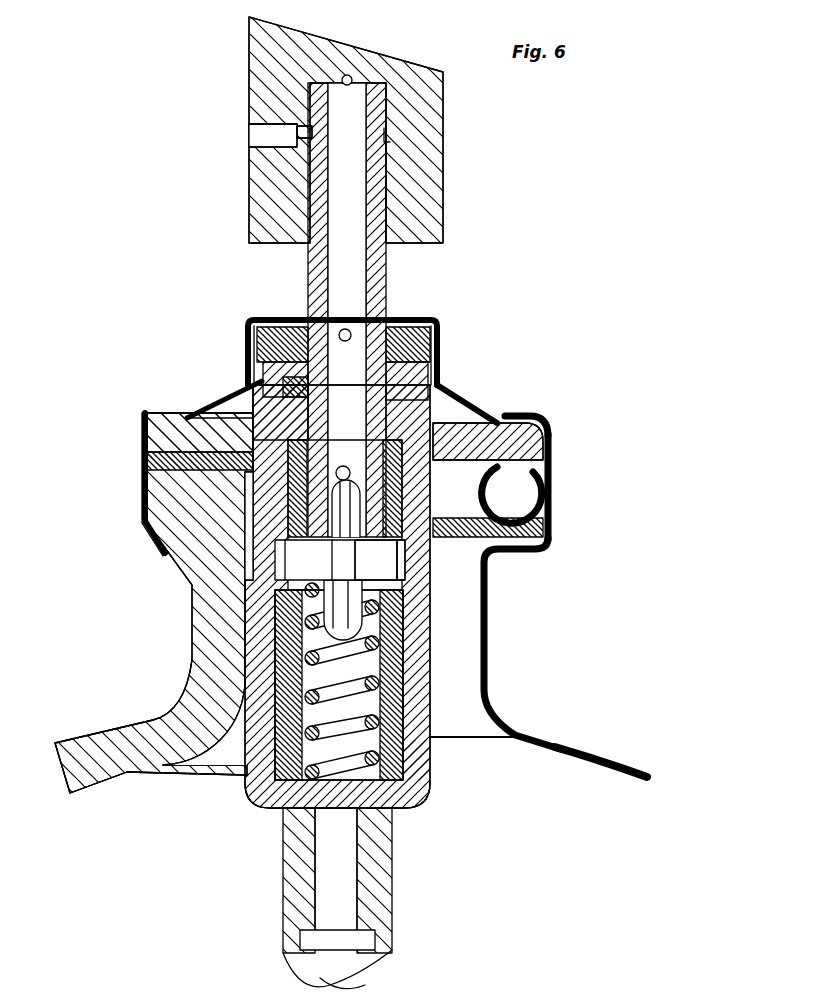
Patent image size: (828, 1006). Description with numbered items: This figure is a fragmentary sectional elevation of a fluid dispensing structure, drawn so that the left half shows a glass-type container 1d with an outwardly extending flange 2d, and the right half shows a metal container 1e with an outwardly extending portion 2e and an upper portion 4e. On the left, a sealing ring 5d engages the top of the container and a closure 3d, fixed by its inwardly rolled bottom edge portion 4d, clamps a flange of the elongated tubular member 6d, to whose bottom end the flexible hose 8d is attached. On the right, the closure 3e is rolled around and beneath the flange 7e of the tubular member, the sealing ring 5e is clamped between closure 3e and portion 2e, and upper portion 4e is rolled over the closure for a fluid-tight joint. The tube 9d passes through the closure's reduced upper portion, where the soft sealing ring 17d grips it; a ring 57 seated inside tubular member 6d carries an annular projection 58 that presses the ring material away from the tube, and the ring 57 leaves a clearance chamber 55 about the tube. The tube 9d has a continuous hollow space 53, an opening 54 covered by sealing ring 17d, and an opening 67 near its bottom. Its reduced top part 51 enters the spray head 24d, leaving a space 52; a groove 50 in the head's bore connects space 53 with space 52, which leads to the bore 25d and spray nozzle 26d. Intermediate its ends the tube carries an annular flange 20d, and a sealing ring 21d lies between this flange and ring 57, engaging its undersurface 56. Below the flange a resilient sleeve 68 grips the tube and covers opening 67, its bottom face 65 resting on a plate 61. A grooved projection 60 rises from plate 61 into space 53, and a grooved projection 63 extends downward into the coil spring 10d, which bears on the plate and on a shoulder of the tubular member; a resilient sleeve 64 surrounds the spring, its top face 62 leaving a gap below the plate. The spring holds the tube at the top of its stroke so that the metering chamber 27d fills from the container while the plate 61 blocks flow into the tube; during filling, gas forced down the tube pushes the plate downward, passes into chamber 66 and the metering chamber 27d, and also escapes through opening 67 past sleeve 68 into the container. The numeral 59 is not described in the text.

The container 1d is at (100, 740).
The container 1e is at (575, 737).
The outwardly extending flange 2d is at (170, 577).
The outwardly extending portion 2e is at (548, 541).
The closure 3d is at (160, 541).
The closure 3e is at (552, 462).
The inwardly rolled bottom edge portion 4d is at (178, 548).
The upper portion 4e is at (537, 418).
The sealing ring 5d is at (148, 470).
The sealing ring 5e is at (546, 530).
The tubular member 6d is at (395, 812).
The flange 7e is at (512, 442).
The flexible hose 8d is at (395, 870).
The tube 9d is at (420, 372).
The coil spring 10d is at (420, 762).
The sealing ring 17d is at (268, 325).
The annular flange 20d is at (270, 427).
The sealing ring 21d is at (290, 400).
The spray head 24d is at (420, 174).
The bore 25d is at (298, 140).
The spray nozzle 26d is at (298, 128).
The metering chamber 27d is at (278, 493).
The groove 50 is at (352, 78).
The part of smaller diameter 51 is at (378, 127).
The space 52 is at (388, 137).
The hollow continuous space 53 is at (356, 266).
The opening 54 is at (351, 334).
The chamber 55 is at (402, 385).
The undersurface 56 is at (470, 412).
The ring 57 is at (285, 382).
The annular projection 58 is at (272, 360).
The tube base 59 is at (300, 430).
The longitudinally grooved projection 60 is at (282, 522).
The plate 61 is at (340, 560).
The top face 62 is at (280, 580).
The longitudinally grooved projection 63 is at (290, 615).
The resilient sleeve 64 is at (300, 672).
The bottom face 65 is at (410, 562).
The chamber 66 is at (376, 560).
The opening 67 is at (406, 458).
The resilient sleeve 68 is at (410, 548).